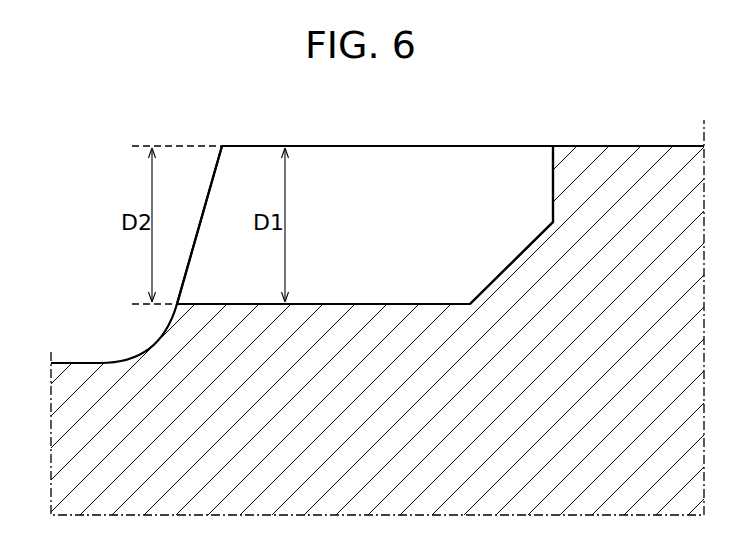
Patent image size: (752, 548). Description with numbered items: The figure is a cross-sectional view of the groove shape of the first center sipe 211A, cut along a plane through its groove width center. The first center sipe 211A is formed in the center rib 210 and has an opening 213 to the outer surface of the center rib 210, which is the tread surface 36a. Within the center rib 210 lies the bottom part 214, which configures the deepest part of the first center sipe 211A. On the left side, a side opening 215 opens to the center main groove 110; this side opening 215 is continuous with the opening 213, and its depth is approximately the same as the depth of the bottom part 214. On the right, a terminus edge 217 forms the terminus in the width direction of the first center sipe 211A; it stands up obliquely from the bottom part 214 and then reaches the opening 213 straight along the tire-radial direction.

The center main groove 110 is at (80, 362).
The center rib 210 is at (596, 146).
The tread surface 36a is at (658, 146).
The first center sipe 211A is at (303, 237).
The opening 213 is at (368, 157).
The bottom part 214 is at (333, 304).
The side opening 215 is at (212, 223).
The terminus edge 217 is at (553, 185).